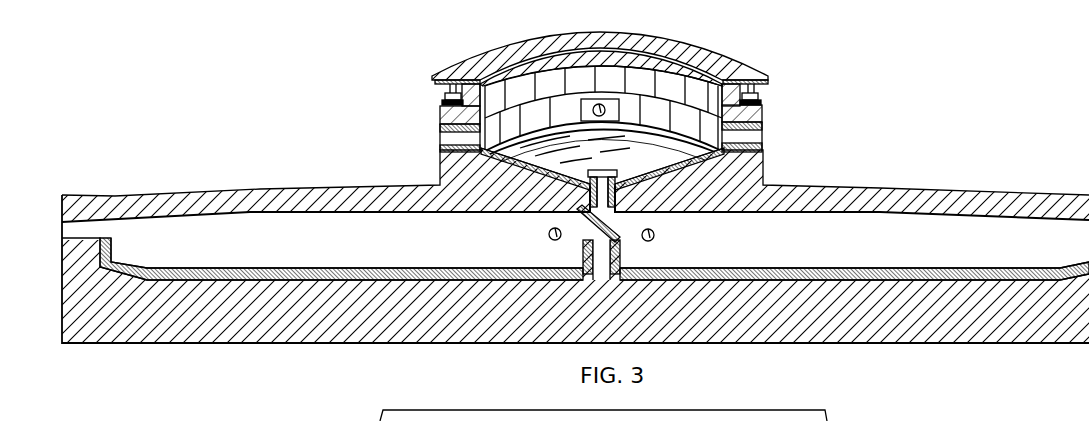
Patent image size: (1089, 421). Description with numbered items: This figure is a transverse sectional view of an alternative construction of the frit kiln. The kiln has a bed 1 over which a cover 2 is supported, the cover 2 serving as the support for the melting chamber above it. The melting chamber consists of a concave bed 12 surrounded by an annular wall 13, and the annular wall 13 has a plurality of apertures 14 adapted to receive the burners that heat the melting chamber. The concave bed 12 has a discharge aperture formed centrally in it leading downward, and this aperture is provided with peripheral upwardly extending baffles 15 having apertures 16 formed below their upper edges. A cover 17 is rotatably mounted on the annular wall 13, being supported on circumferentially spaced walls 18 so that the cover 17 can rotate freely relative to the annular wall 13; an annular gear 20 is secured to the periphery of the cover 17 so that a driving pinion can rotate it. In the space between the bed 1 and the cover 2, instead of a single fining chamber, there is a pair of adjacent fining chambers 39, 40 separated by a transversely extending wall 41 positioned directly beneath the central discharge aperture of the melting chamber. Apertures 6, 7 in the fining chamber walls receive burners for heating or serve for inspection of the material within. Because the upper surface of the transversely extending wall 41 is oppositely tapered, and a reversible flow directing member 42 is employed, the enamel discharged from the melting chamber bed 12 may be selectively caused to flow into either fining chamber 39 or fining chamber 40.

The bed 1 is at (873, 332).
The cover 2 is at (878, 187).
The aperture 6 is at (549, 235).
The aperture 7 is at (106, 228).
The concave bed 12 is at (602, 159).
The annular wall 13 is at (764, 112).
The apertures 14 is at (452, 136).
The baffles 15 is at (604, 172).
The apertures 16 is at (588, 172).
The cover 17 is at (698, 53).
The circumferentially spaced walls 18 is at (447, 91).
The annular gear 20 is at (432, 79).
The fining chamber 39 is at (977, 233).
The fining chamber 40 is at (295, 222).
The transversely extending wall 41 is at (603, 250).
The reversible flow directing member 42 is at (584, 233).